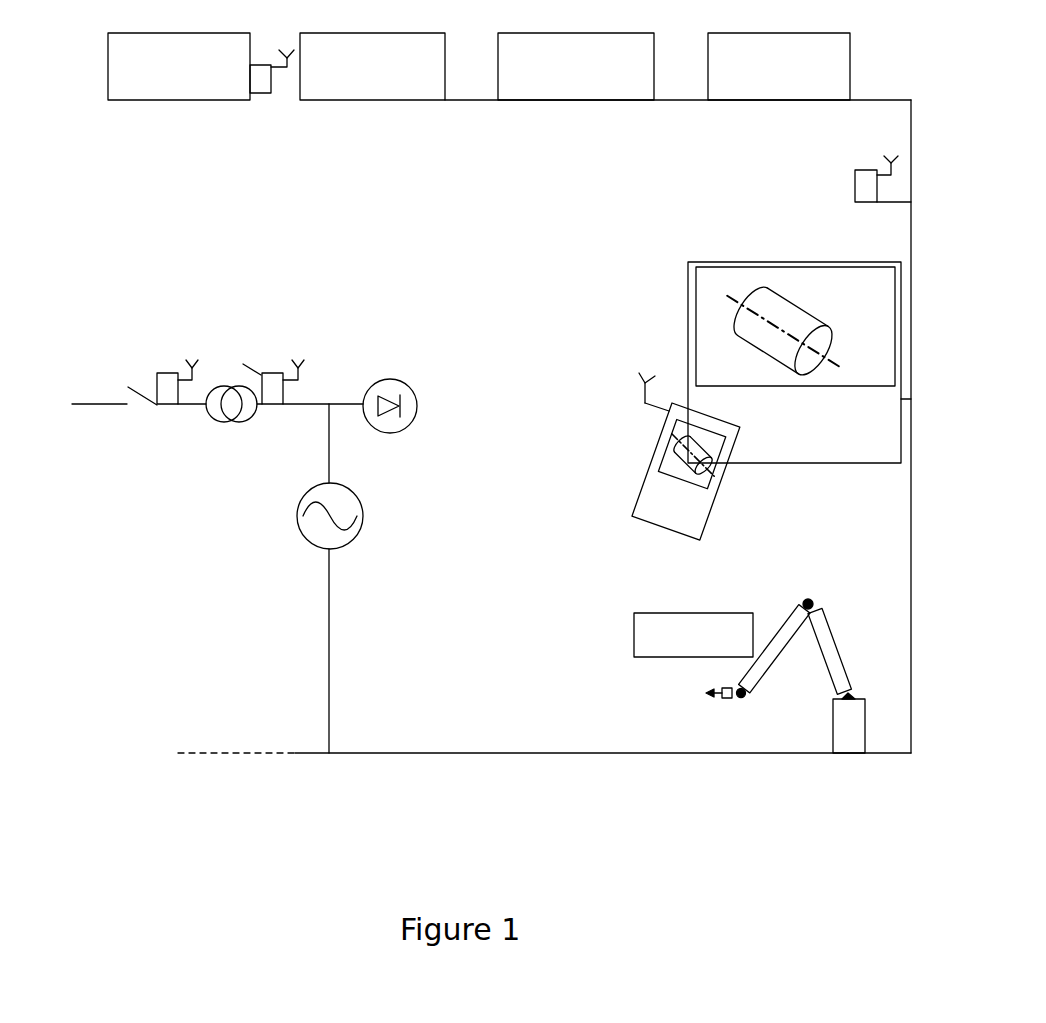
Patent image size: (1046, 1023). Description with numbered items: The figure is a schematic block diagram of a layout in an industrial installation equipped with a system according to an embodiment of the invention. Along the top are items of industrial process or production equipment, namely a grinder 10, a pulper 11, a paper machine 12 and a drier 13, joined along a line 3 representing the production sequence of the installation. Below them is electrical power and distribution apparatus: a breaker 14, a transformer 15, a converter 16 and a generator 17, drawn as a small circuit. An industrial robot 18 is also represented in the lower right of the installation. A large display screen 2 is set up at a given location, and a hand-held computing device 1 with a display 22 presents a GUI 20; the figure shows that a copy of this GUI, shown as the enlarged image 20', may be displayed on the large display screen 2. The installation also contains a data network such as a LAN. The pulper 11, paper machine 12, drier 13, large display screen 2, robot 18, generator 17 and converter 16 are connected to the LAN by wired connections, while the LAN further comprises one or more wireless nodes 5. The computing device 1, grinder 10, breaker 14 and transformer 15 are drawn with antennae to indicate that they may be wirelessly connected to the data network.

The computing device 1 is at (635, 482).
The large display screen 2 is at (693, 269).
The paper production line 3 is at (676, 107).
The wireless node 5 is at (855, 183).
The grinder 10 is at (210, 88).
The pulper 11 is at (428, 84).
The paper machine 12 is at (631, 90).
The drier 13 is at (790, 92).
The breaker 14 is at (157, 408).
The transformer 15 is at (240, 435).
The converter 16 is at (390, 421).
The generator 17 is at (335, 540).
The industrial robot 18 is at (749, 676).
The GUI 20 is at (739, 479).
The paper roll 20' is at (692, 331).
The display screen 22 is at (672, 452).